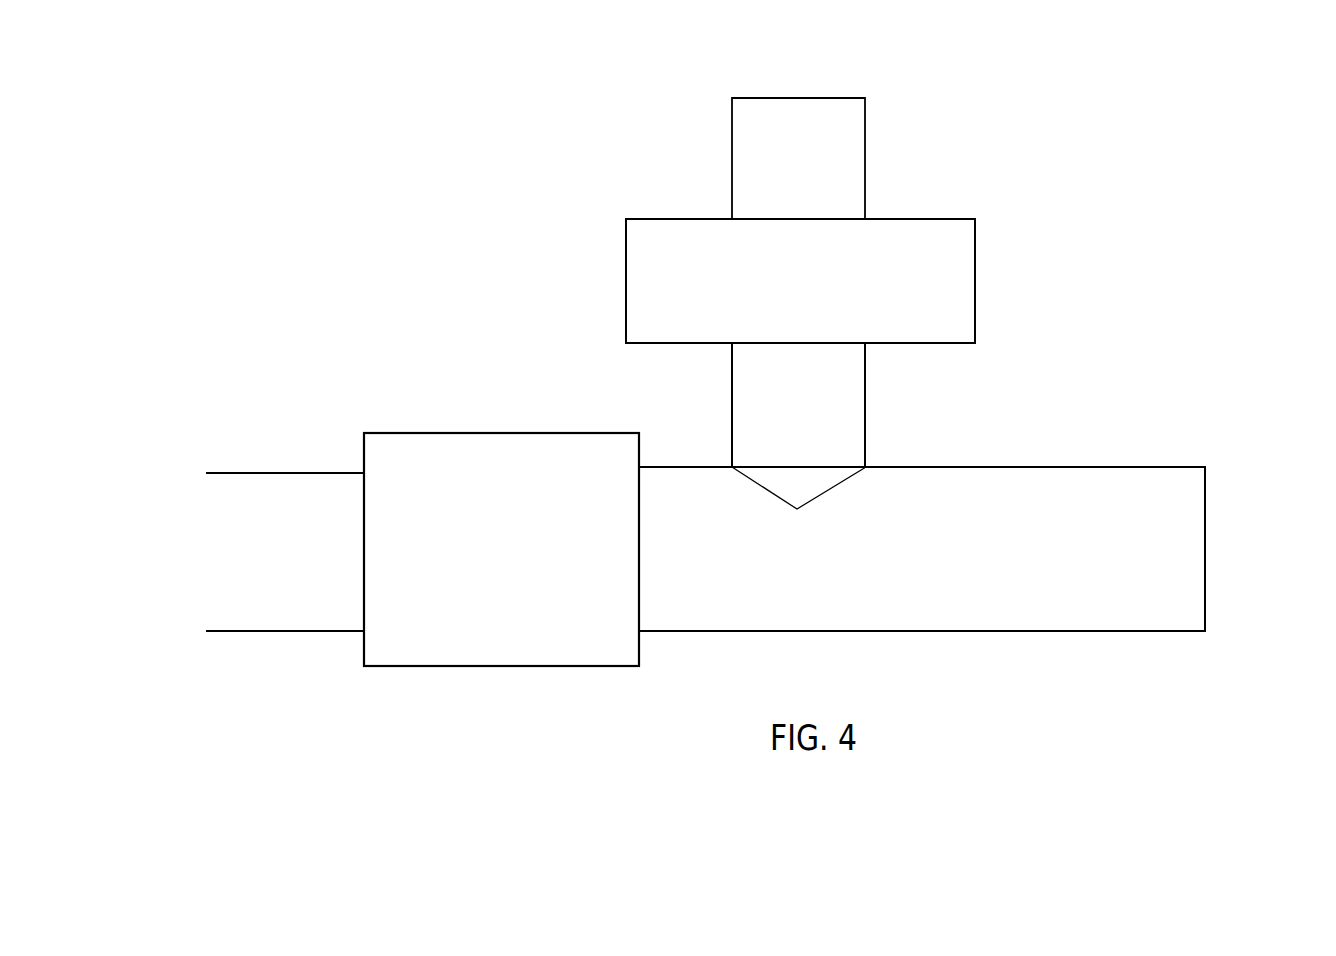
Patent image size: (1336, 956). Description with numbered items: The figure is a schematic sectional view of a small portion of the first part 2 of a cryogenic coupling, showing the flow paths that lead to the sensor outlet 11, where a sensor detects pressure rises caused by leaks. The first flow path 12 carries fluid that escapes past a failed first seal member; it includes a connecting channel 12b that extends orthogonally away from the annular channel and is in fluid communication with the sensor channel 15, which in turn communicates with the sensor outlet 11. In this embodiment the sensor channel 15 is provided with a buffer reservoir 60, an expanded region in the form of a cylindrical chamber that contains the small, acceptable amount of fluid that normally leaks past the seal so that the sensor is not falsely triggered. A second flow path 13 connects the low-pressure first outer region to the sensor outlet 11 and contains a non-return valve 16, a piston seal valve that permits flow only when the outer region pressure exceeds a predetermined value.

The first part 2 is at (296, 378).
The sensor outlet 11 is at (813, 89).
The buffer reservoir 60 is at (933, 298).
The sensor channel 15 is at (836, 397).
The first flow path 12 is at (886, 592).
The connecting channel 12b is at (1131, 591).
The non-return valve 16 is at (481, 604).
The second flow path 13 is at (237, 587).